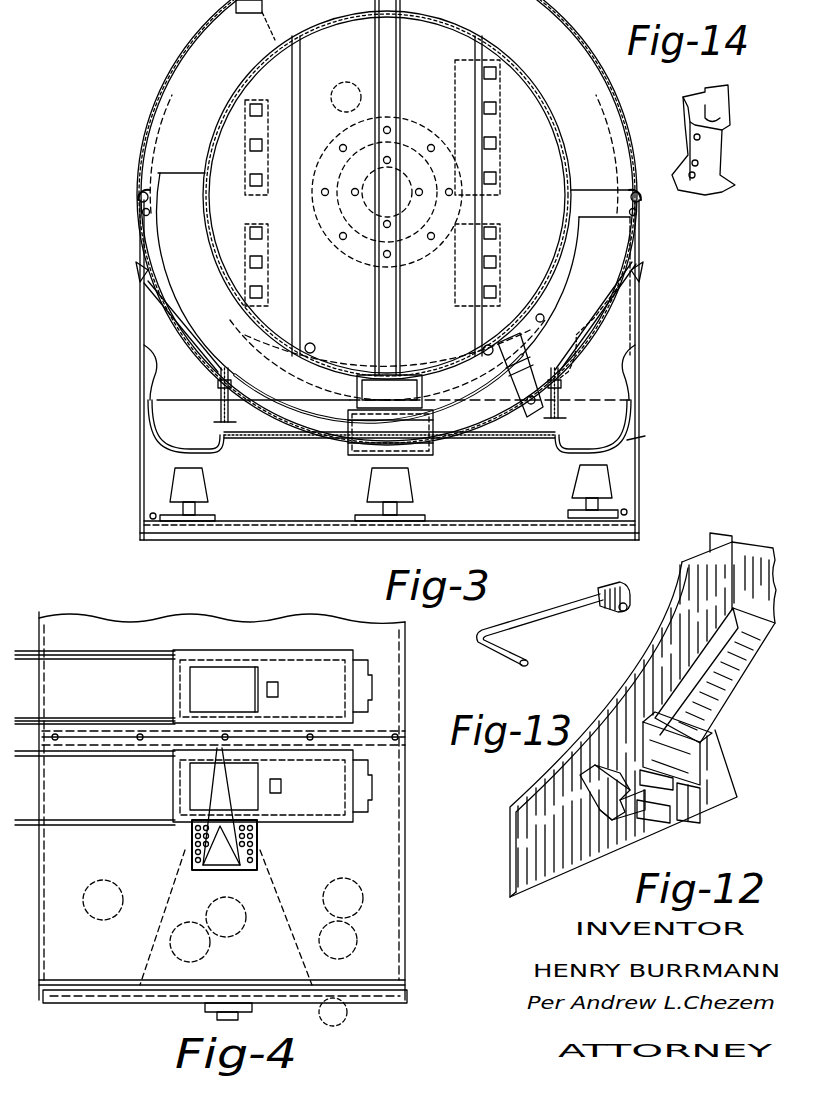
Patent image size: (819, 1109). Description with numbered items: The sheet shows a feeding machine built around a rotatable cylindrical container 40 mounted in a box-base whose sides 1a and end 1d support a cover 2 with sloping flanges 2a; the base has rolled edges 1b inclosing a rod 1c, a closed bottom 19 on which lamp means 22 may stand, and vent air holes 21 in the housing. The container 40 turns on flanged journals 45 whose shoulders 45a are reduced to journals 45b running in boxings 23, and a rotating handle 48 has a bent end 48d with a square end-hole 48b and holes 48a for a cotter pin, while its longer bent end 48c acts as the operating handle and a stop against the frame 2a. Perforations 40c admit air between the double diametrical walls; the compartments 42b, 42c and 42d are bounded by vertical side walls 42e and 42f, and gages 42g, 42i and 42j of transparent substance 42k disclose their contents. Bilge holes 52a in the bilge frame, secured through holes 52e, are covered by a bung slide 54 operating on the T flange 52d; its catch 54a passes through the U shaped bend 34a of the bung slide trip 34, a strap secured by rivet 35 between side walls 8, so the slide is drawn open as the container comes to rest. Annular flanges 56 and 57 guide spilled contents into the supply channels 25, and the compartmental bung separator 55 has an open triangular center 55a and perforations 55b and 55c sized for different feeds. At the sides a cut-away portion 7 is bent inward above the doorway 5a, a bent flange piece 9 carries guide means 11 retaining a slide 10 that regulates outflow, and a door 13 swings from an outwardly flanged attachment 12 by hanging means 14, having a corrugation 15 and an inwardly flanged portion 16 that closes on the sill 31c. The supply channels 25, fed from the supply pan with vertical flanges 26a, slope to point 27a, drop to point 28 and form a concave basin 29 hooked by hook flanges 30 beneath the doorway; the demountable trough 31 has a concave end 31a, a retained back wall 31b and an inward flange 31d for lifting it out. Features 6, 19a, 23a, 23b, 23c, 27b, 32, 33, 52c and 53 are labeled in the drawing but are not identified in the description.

In FIG. 3, the side of box-base 1a is at (138, 241).
In FIG. 12, the side of box-base 1a is at (729, 578).
In FIG. 3, the rolled edge 1b is at (140, 212).
In FIG. 3, the rod 1c is at (136, 196).
In FIG. 3, the end of box-base 1d is at (362, 297).
In FIG. 3, the cover 2 is at (190, 50).
In FIG. 3, the sloping flange 2a is at (138, 193).
In FIG. 3, the rectangular doorway 5a is at (160, 322).
In FIG. 3, the annular space 6 is at (173, 369).
In FIG. 3, the cut-away portion 7 is at (182, 323).
In FIG. 12, the cut-away portion 7 is at (715, 675).
In FIG. 3, the side wall of trough housing 8 is at (589, 277).
In FIG. 12, the side wall of trough housing 8 is at (639, 726).
In FIG. 3, the bent flange piece 9 is at (389, 392).
In FIG. 12, the bent flange piece 9 is at (677, 748).
In FIG. 3, the slide 10 is at (392, 387).
In FIG. 12, the slide 10 is at (655, 796).
In FIG. 3, the guide means 11 is at (390, 415).
In FIG. 12, the guide means 11 is at (690, 823).
In FIG. 3, the outwardly flanged attachment 12 is at (134, 271).
In FIG. 3, the door 13 is at (138, 311).
In FIG. 3, the hanging means 14 is at (138, 286).
In FIG. 3, the corrugation 15 is at (144, 373).
In FIG. 3, the inwardly flanged portion 16 is at (146, 401).
In FIG. 3, the bottom 19 is at (389, 520).
In FIG. 3, the base compartment 19a is at (289, 469).
In FIG. 3, the vent air hole 21 is at (391, 502).
In FIG. 3, the lamp means 22 is at (205, 491).
In FIG. 14, the boxing 23 is at (726, 151).
In FIG. 14, the clip tail 23a is at (722, 171).
In FIG. 14, the clip prong 23b is at (718, 91).
In FIG. 14, the clip notch 23c is at (722, 116).
In FIG. 3, the supply channel 25 is at (394, 411).
In FIG. 3, the vertical flange 26a is at (420, 451).
In FIG. 3, the vertical drop point 27a is at (409, 429).
In FIG. 3, the cross member end 27b is at (276, 469).
In FIG. 3, the shallow depth point 28 is at (386, 456).
In FIG. 3, the concave trough basin 29 is at (182, 453).
In FIG. 3, the hook flange 30 is at (150, 411).
In FIG. 3, the demountable trough 31 is at (389, 425).
In FIG. 3, the trough end 31a is at (401, 428).
In FIG. 3, the trough back wall 31b is at (210, 453).
In FIG. 3, the flanged door sill 31c is at (147, 405).
In FIG. 3, the trough flange 31d is at (220, 413).
In FIG. 3, the stud 32 is at (621, 463).
In FIG. 3, the pin 33 is at (649, 437).
In FIG. 3, the bung slide trip 34 is at (515, 393).
In FIG. 12, the bung slide trip 34 is at (605, 792).
In FIG. 12, the U shaped bend 34a is at (614, 821).
In FIG. 3, the rivet 35 is at (535, 401).
In FIG. 3, the cylindrical container 40 is at (232, 98).
In FIG. 4, the perforations 40c is at (138, 741).
In FIG. 3, the triangular compartment 42b is at (383, 222).
In FIG. 4, the triangular compartment 42b is at (224, 842).
In FIG. 3, the half-cylindrical compartment 42c is at (239, 207).
In FIG. 4, the half-cylindrical compartment 42c is at (150, 842).
In FIG. 3, the half-cylindrical compartment 42d is at (536, 227).
In FIG. 4, the half-cylindrical compartment 42d is at (299, 841).
In FIG. 3, the vertical side wall 42e is at (372, 279).
In FIG. 4, the vertical side wall 42e is at (190, 942).
In FIG. 3, the vertical side wall 42f is at (398, 279).
In FIG. 4, the vertical side wall 42f is at (338, 940).
In FIG. 3, the gage 42g is at (250, 149).
In FIG. 3, the gage 42i is at (458, 79).
In FIG. 3, the gage 42j is at (498, 109).
In FIG. 3, the transparent substance 42k is at (512, 269).
In FIG. 4, the flanged journal 45 is at (223, 1003).
In FIG. 4, the journal shoulder 45a is at (255, 1004).
In FIG. 4, the journal 45b is at (205, 1011).
In FIG. 13, the rotating handle 48 is at (562, 599).
In FIG. 13, the hole 48a is at (612, 587).
In FIG. 13, the square end-hole 48b is at (622, 615).
In FIG. 13, the long bent end 48c is at (513, 653).
In FIG. 13, the short bent end 48d is at (624, 603).
In FIG. 4, the bilge hole 52a is at (224, 739).
In FIG. 3, the slide housing 52c is at (332, 417).
In FIG. 4, the slide housing 52c is at (272, 641).
In FIG. 3, the T flange 52d is at (387, 360).
In FIG. 3, the securing hole 52e is at (355, 385).
In FIG. 3, the roller 53 is at (462, 343).
In FIG. 3, the bilge slide 54 is at (522, 365).
In FIG. 4, the bilge slide 54 is at (373, 734).
In FIG. 3, the catch 54a is at (433, 437).
In FIG. 4, the catch 54a is at (278, 685).
In FIG. 3, the plate 55 is at (389, 391).
In FIG. 4, the plate 55 is at (226, 902).
In FIG. 4, the center portion of bung separator 55a is at (224, 845).
In FIG. 4, the perforations 55b is at (192, 837).
In FIG. 4, the perforations 55c is at (258, 839).
In FIG. 4, the annular flange 56 is at (58, 651).
In FIG. 4, the annular flange 57 is at (95, 803).